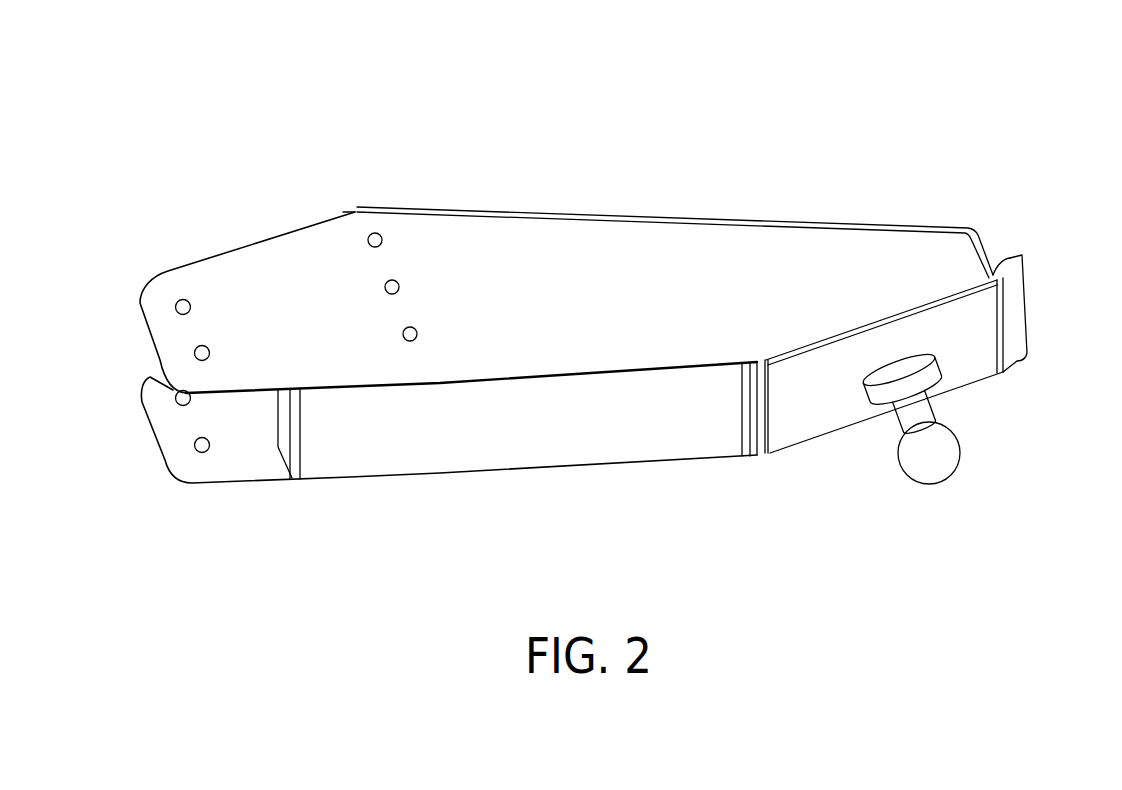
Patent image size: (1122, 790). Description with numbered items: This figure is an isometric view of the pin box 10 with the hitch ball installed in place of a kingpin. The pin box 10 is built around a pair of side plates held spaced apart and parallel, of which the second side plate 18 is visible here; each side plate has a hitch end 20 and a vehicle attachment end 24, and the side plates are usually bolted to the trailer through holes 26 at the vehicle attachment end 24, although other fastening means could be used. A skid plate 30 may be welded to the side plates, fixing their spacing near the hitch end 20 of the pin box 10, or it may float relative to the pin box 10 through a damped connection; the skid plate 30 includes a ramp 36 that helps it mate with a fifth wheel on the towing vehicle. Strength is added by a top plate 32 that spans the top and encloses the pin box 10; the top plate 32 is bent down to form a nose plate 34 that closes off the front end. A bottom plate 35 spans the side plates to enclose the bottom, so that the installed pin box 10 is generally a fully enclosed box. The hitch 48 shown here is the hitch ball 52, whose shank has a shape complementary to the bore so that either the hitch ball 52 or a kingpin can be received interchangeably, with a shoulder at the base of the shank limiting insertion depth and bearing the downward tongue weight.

The pin box 10 is at (722, 165).
The second side plate 18 is at (289, 231).
The hitch end 20 is at (823, 265).
The vehicle attachment end 24 is at (248, 286).
The holes 26 is at (183, 307).
The skid plate 30 is at (777, 455).
The top plate 32 is at (526, 212).
The nose plate 34 is at (987, 244).
The bottom plate 35 is at (408, 440).
The ramp 36 is at (1007, 260).
The hitch 48 is at (893, 479).
The hitch ball 52 is at (903, 468).